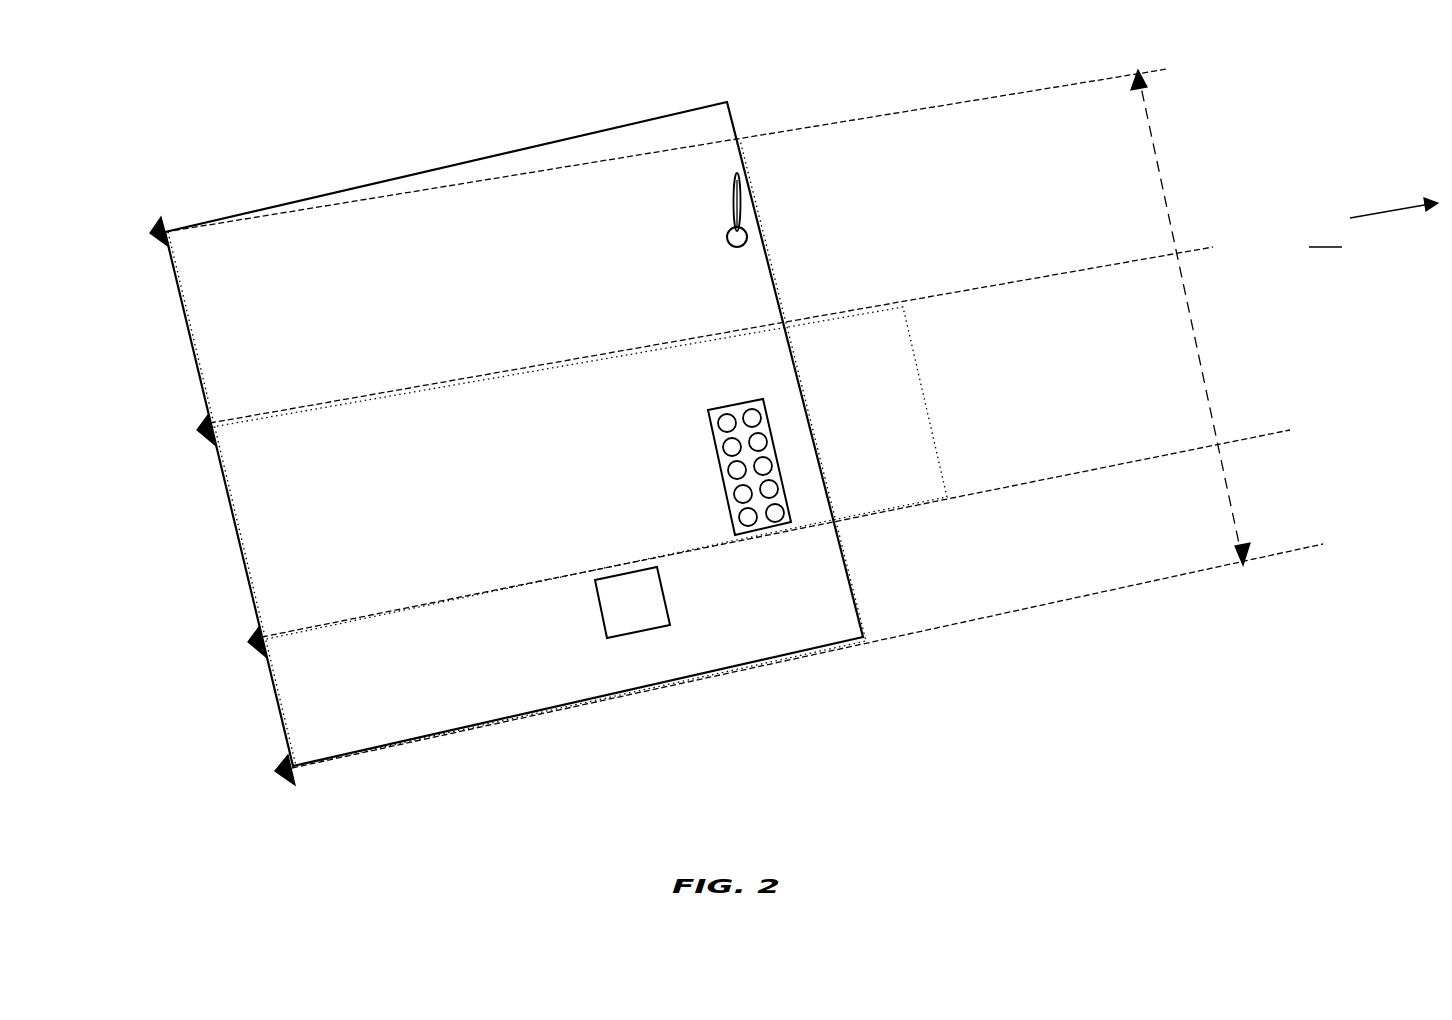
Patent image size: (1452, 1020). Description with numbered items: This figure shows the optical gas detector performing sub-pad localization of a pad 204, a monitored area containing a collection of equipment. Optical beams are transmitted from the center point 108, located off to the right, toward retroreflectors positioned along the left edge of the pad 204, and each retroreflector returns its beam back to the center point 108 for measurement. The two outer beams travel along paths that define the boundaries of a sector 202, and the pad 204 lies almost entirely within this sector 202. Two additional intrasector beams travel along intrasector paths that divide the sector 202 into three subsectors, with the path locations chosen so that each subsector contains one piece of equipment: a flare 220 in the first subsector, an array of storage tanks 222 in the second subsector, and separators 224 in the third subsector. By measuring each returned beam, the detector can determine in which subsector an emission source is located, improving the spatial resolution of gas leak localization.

The center point 108 is at (1337, 221).
The sector 202 is at (1194, 334).
The pad 204 is at (414, 165).
The flare 220 is at (726, 238).
The array of storage tanks 222 is at (720, 470).
The separators 224 is at (665, 596).